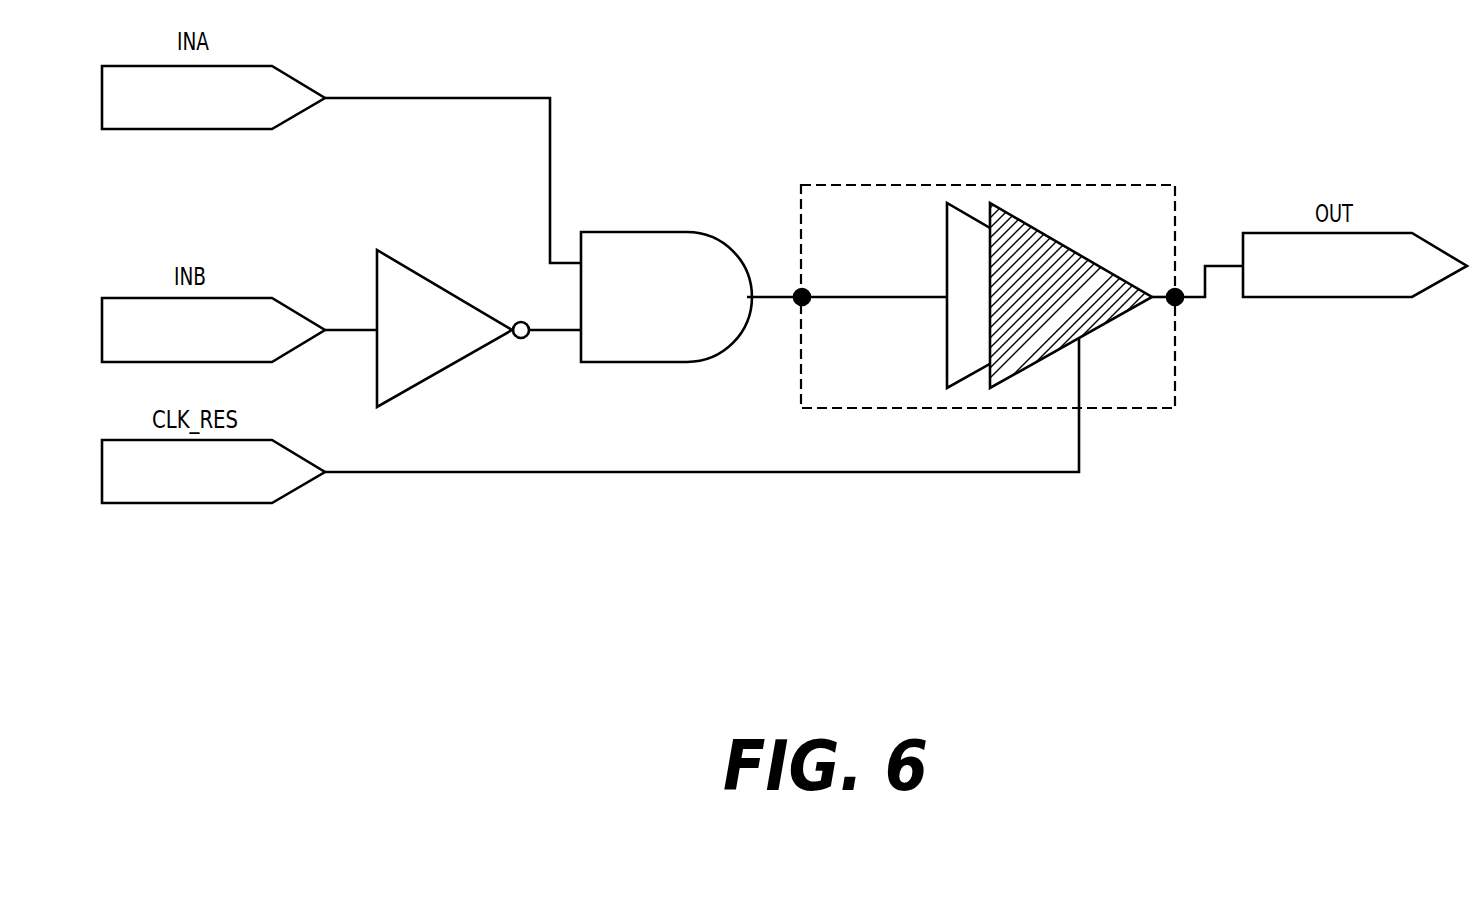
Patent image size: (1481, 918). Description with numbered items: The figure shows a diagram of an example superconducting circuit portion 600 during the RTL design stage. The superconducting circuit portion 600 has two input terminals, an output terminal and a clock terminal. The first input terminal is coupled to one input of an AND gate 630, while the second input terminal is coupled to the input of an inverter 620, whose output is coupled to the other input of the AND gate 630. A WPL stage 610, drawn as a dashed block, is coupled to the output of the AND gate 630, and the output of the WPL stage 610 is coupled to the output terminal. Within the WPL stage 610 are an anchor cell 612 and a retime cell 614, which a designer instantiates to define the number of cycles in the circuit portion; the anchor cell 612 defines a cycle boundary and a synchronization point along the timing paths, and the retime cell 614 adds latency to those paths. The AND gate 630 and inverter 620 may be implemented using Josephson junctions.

The superconducting circuit portion 600 is at (826, 649).
The WPL stage 610 is at (988, 257).
The anchor cell 612 is at (1023, 220).
The retime cell 614 is at (947, 248).
The inverter 620 is at (479, 328).
The AND gate 630 is at (691, 297).